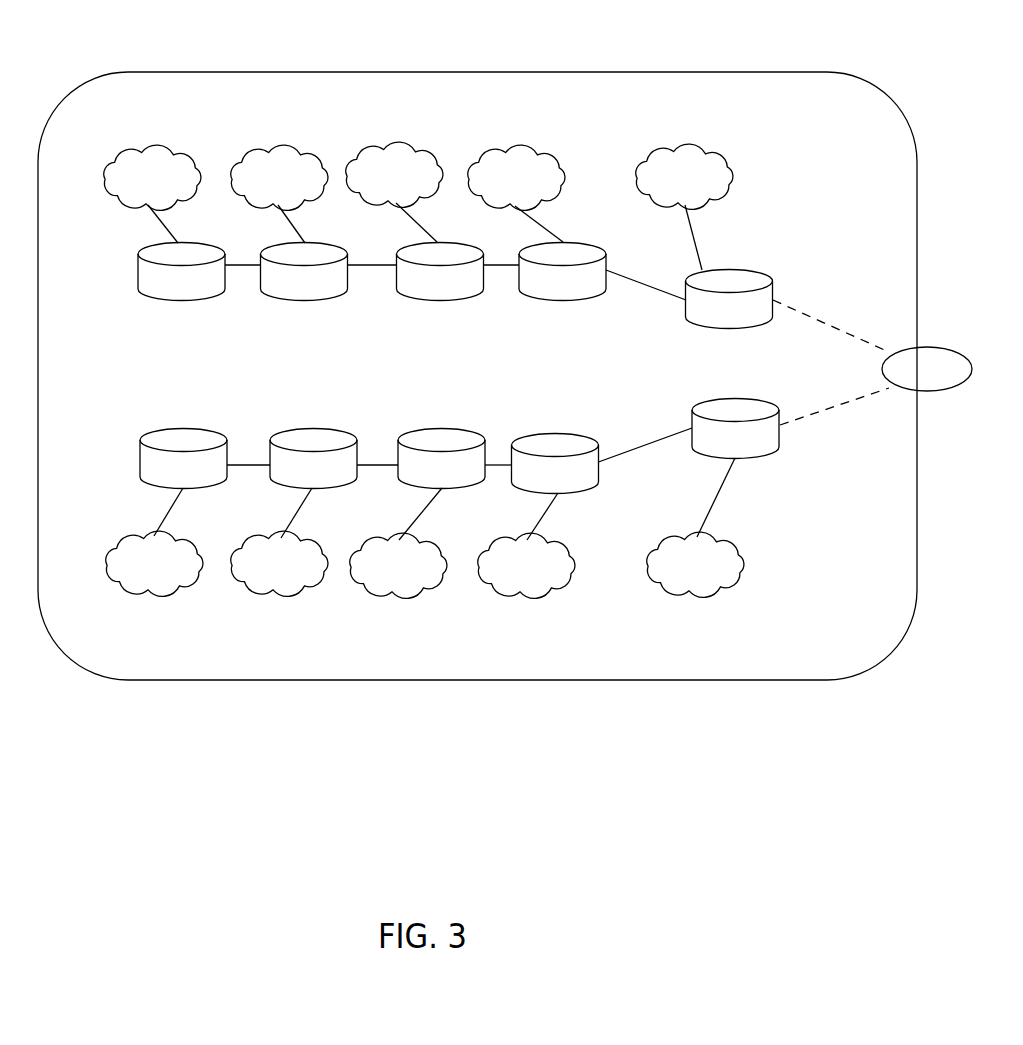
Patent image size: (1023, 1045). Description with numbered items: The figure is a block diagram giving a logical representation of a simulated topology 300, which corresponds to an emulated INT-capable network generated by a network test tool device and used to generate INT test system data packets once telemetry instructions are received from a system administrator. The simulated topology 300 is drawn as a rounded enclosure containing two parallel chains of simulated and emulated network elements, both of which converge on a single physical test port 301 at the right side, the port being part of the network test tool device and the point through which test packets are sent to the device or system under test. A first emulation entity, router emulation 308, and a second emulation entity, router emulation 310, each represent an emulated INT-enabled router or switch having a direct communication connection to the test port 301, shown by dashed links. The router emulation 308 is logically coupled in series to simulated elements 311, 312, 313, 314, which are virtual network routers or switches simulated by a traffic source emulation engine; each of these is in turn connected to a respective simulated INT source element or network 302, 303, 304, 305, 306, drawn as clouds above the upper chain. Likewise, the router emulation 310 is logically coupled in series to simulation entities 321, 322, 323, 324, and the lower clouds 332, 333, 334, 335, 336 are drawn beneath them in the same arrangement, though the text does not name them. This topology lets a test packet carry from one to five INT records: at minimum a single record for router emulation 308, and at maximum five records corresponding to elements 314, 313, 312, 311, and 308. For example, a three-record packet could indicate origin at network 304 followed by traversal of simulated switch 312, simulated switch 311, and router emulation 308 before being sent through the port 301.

The simulated topology 300 is at (845, 72).
The physical test port 301 is at (950, 348).
The simulated INT source network 302 is at (700, 146).
The simulated INT source network 303 is at (536, 152).
The simulated INT source network 304 is at (420, 148).
The simulated INT source network 305 is at (303, 152).
The simulated INT source network 306 is at (176, 152).
The router emulation 308 is at (752, 271).
The router emulation 310 is at (749, 398).
The simulated element 311 is at (570, 299).
The simulated element 312 is at (446, 299).
The simulated element 313 is at (320, 300).
The simulated element 314 is at (195, 300).
The simulation entity 321 is at (556, 433).
The simulation entity 322 is at (452, 428).
The simulation entity 323 is at (311, 428).
The simulation entity 324 is at (196, 428).
The data source network 332 is at (690, 594).
The data source network 333 is at (518, 596).
The data source network 334 is at (385, 595).
The data source network 335 is at (272, 596).
The data source network 336 is at (150, 593).